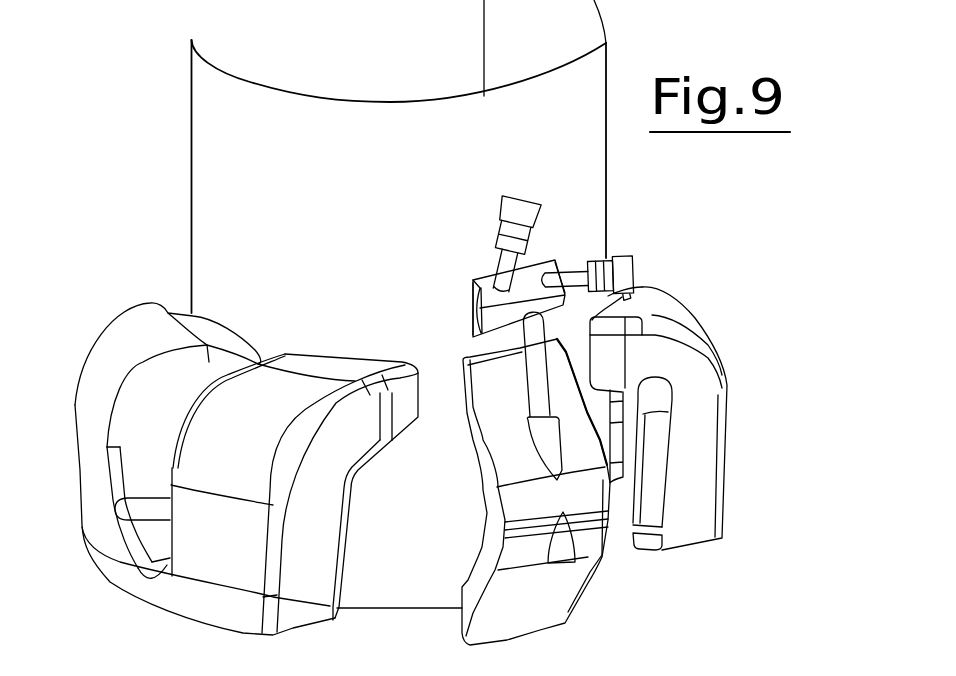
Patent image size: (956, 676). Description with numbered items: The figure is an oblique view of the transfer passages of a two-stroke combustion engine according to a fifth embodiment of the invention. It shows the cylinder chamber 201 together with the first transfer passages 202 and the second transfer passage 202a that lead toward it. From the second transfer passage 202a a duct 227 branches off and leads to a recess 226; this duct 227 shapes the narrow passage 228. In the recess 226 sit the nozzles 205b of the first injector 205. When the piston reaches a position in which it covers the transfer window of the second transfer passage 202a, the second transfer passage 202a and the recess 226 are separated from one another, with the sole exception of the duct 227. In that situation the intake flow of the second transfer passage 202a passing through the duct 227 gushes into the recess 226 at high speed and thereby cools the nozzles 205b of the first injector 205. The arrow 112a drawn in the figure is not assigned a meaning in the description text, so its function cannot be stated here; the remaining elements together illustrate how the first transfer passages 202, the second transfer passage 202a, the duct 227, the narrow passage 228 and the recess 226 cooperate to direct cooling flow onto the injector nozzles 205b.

The cylinder chamber 201 is at (434, 65).
The first transfer passages 202 is at (103, 352).
The second transfer passage 202a is at (552, 595).
The first injector 205 is at (519, 210).
The nozzles 205b is at (472, 281).
The recess 226 is at (520, 280).
The duct 227 is at (538, 400).
The narrow passage 228 is at (471, 358).
The insertion direction 112a is at (533, 373).